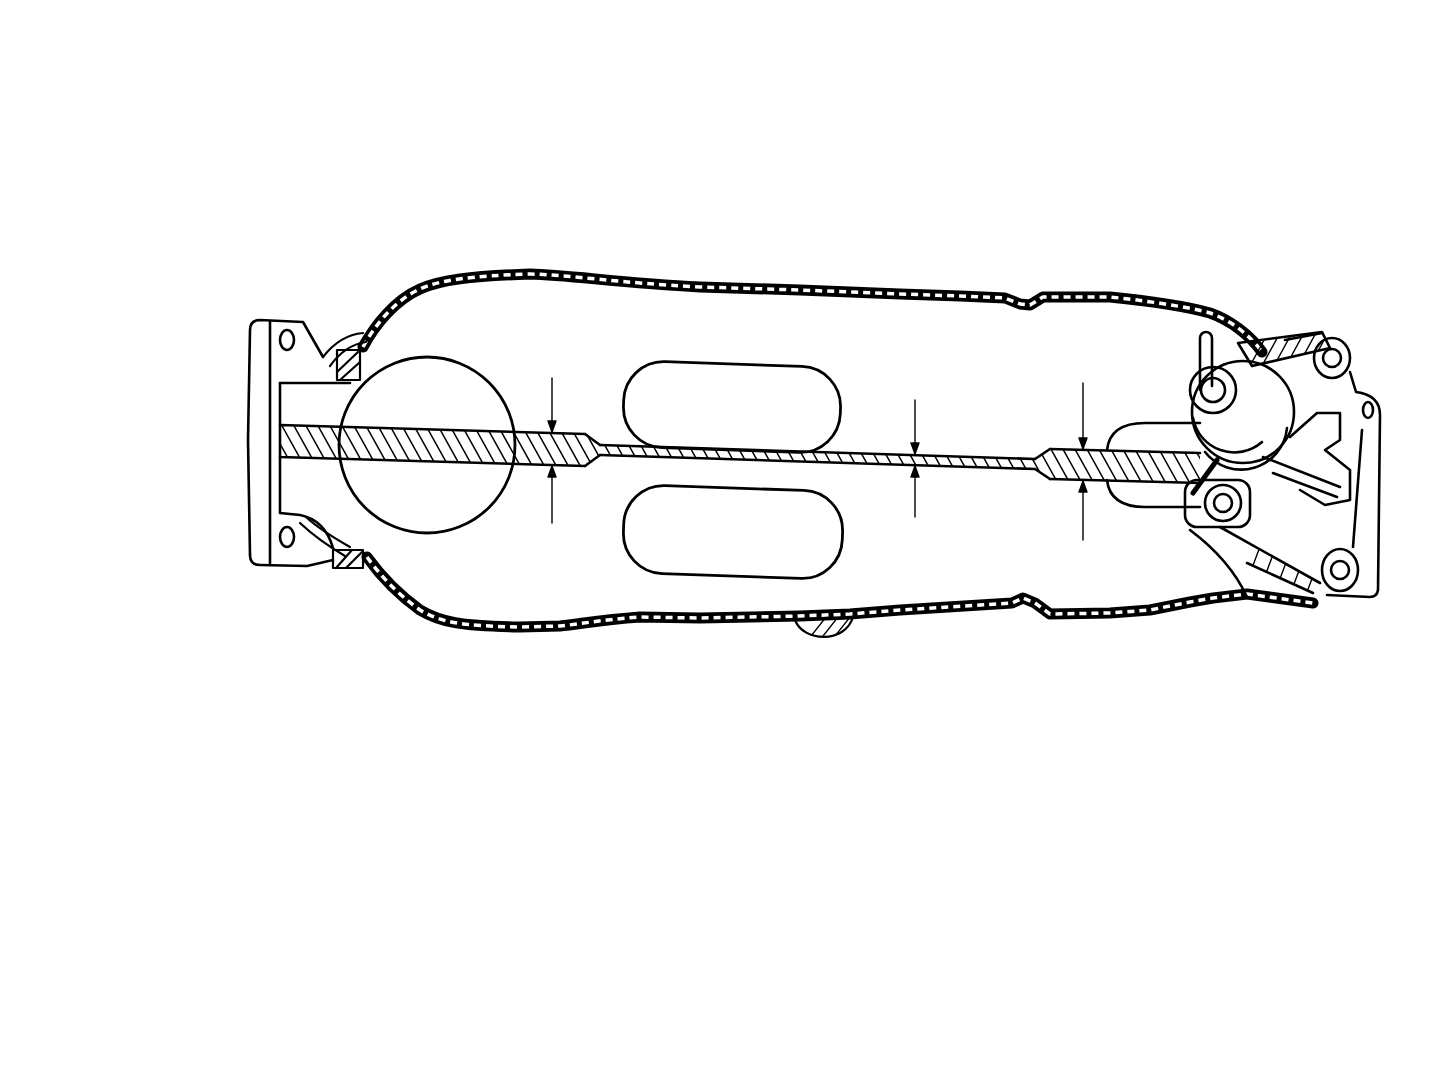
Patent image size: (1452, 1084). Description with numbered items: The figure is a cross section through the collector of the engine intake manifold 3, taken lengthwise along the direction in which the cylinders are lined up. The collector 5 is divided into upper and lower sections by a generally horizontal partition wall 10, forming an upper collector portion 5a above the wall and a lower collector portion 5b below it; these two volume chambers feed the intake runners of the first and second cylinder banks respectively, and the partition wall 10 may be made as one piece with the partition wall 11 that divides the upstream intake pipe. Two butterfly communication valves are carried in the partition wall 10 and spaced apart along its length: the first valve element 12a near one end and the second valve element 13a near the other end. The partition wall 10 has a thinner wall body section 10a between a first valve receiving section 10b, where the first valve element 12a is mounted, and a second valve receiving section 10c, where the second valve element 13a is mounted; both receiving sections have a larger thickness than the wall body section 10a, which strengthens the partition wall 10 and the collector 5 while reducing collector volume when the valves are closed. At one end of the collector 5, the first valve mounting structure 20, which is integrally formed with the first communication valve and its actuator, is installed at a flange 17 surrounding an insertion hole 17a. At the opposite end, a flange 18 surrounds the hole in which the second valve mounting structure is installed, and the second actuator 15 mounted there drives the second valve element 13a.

The intake manifold 3 is at (1200, 165).
The collector 5 is at (530, 268).
The upper collector portion 5a is at (815, 312).
The lower collector portion 5b is at (913, 580).
The partition wall 10 is at (975, 456).
The wall body section 10a is at (857, 452).
The first valve receiving section 10b is at (524, 431).
The second valve receiving section 10c is at (1063, 449).
The partition wall 11 is at (721, 490).
The first valve element 12a is at (418, 498).
The second valve element 13a is at (1153, 497).
The second actuator 15 is at (1230, 373).
The flange 17 is at (305, 348).
The insertion hole 17a is at (318, 560).
The flange 18 is at (1360, 583).
The first valve mounting structure 20 is at (220, 443).